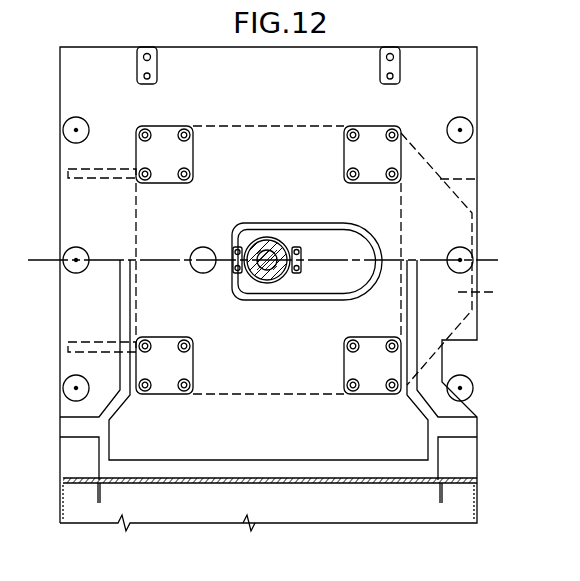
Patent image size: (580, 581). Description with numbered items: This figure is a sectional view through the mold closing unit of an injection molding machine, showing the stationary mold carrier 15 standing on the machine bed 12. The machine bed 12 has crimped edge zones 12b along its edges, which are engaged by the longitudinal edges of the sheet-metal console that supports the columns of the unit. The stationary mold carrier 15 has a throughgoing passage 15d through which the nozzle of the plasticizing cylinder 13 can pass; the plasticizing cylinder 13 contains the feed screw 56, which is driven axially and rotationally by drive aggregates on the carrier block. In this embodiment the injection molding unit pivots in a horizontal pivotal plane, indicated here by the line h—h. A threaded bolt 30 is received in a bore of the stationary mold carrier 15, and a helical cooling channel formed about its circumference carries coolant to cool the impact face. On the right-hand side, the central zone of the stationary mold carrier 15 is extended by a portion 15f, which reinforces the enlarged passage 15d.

The stationary mold carrier 15 is at (480, 73).
The throughgoing passage 15d is at (327, 248).
The portion 15f is at (463, 259).
The feed screw 56 is at (251, 236).
The threaded bolt 30 is at (200, 264).
The plasticizing cylinder 13 is at (263, 282).
The machine bed 12 is at (244, 513).
The crimped edge zones 12b is at (462, 486).